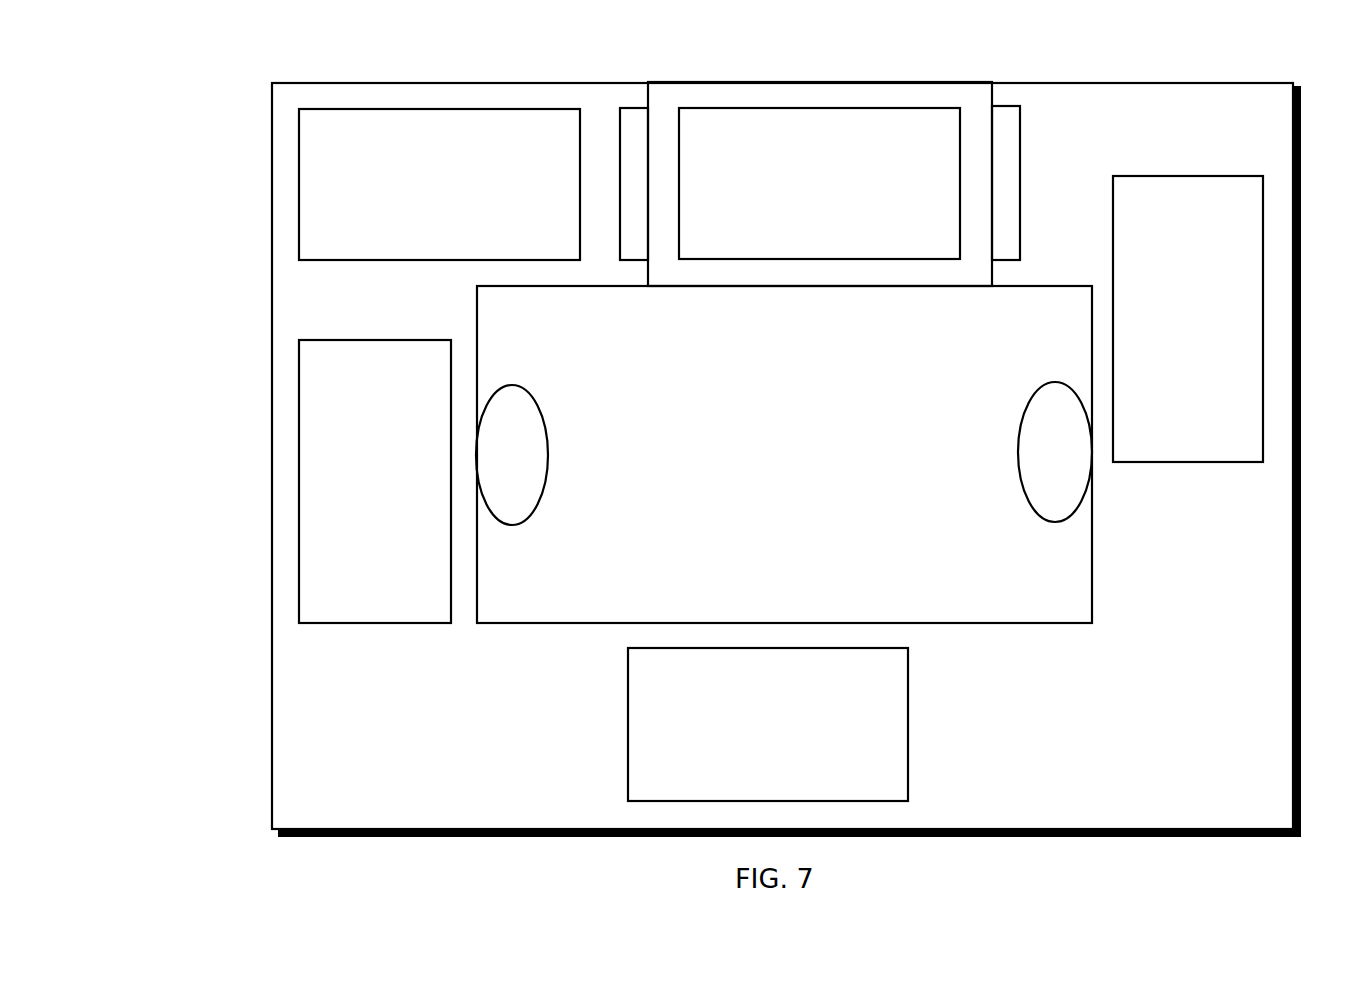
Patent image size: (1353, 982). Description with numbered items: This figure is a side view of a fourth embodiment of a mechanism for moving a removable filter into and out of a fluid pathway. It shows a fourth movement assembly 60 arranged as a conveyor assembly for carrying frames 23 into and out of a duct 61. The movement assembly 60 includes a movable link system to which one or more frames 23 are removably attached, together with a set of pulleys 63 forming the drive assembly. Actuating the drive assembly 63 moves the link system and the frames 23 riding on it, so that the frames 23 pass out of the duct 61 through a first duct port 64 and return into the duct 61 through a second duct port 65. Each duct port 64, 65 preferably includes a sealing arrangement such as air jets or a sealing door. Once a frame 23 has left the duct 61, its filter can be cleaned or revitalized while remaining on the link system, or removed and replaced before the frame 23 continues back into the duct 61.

The fourth movement assembly 60 is at (226, 86).
The duct 61 is at (993, 93).
The pulleys 63 is at (523, 466).
The first duct port 64 is at (1020, 200).
The second duct port 65 is at (618, 249).
The frame 23 is at (454, 193).